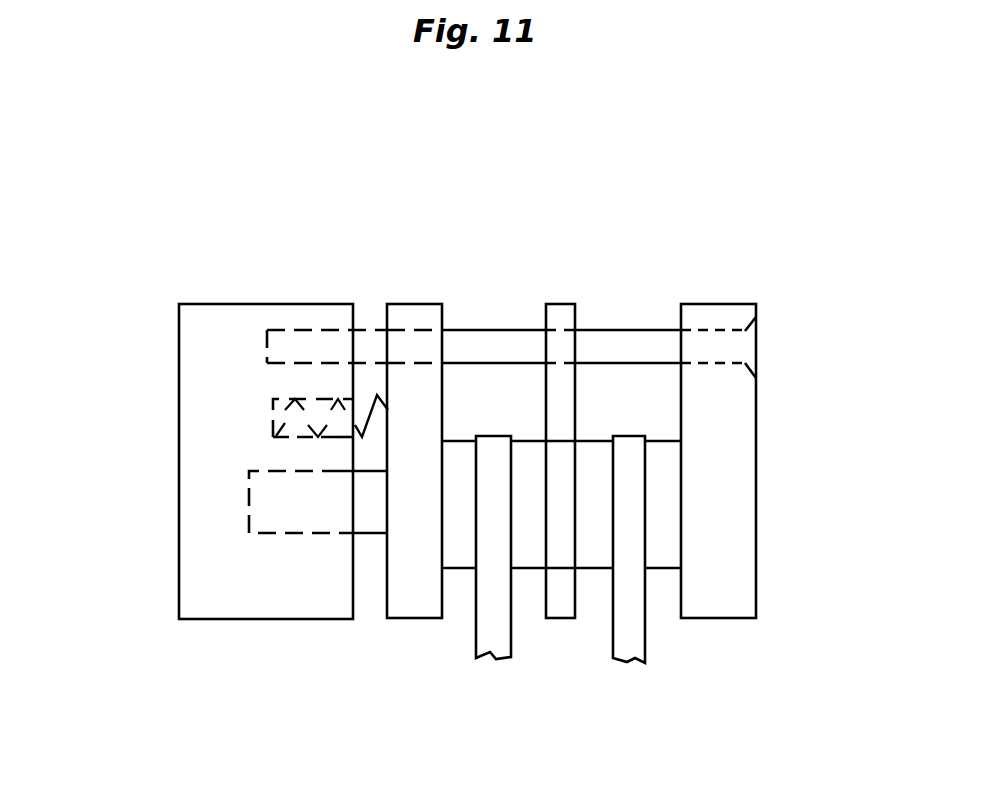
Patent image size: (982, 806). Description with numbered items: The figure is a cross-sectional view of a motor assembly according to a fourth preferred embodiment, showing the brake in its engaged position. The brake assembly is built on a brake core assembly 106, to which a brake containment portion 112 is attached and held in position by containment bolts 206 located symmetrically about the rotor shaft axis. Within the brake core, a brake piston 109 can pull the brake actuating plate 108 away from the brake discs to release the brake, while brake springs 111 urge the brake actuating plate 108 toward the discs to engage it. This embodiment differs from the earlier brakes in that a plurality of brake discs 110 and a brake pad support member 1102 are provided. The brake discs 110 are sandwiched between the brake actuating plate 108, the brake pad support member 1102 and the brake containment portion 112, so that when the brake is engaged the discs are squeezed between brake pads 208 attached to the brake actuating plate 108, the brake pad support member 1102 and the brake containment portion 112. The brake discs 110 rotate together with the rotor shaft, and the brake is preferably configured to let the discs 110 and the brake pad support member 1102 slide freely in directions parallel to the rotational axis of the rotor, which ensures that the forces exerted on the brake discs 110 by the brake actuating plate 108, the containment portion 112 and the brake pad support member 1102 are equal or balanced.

The brake core assembly 106 is at (217, 400).
The brake actuating plate 108 is at (417, 318).
The brake piston 109 is at (368, 510).
The brake disc 110 is at (628, 654).
The brake spring 111 is at (297, 403).
The brake containment portion 112 is at (732, 405).
The containment bolt 206 is at (616, 348).
The brake pad 208 is at (533, 463).
The brake pad support member 1102 is at (563, 322).